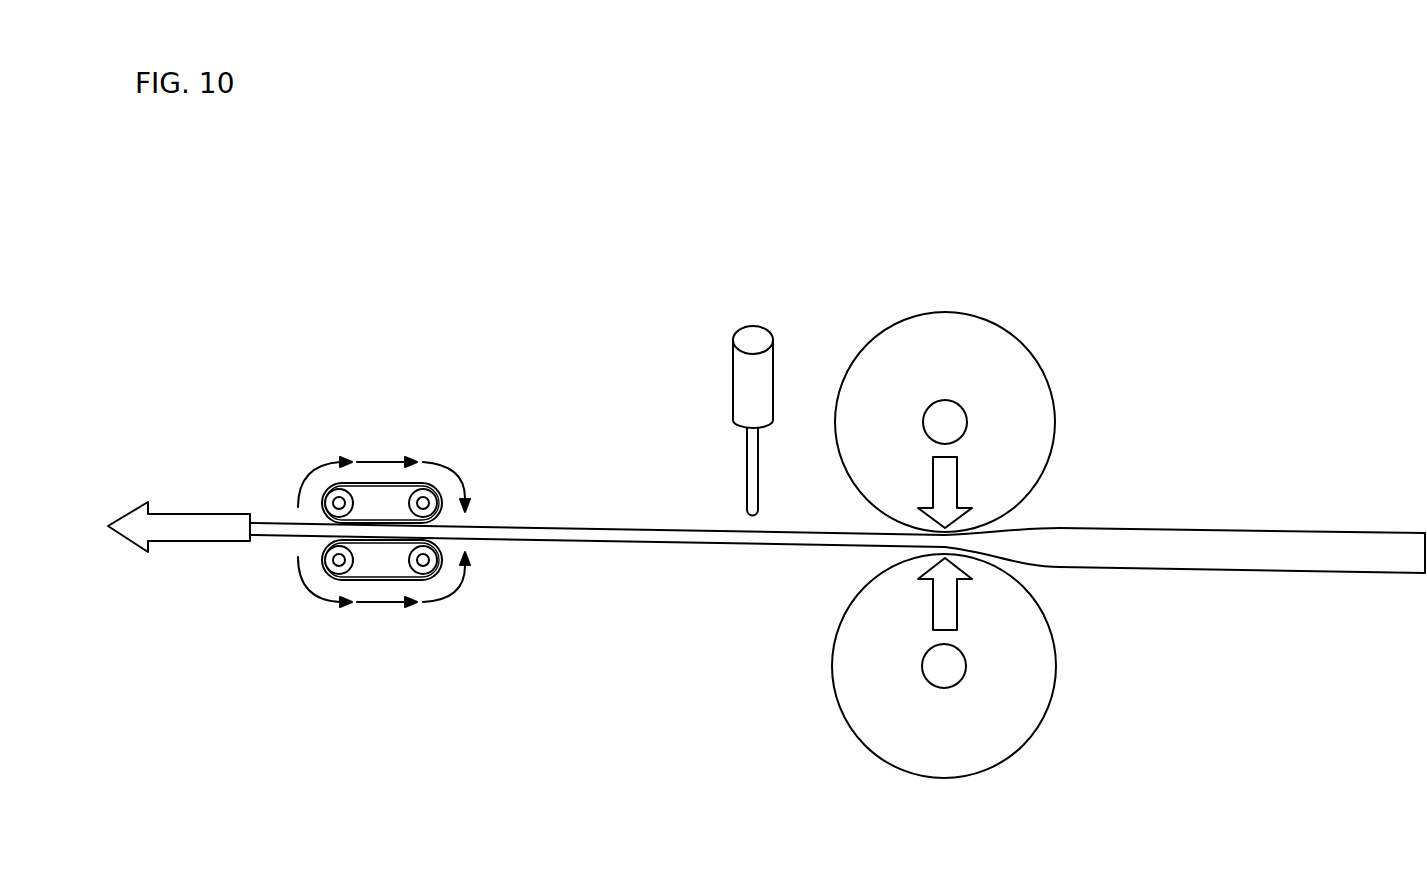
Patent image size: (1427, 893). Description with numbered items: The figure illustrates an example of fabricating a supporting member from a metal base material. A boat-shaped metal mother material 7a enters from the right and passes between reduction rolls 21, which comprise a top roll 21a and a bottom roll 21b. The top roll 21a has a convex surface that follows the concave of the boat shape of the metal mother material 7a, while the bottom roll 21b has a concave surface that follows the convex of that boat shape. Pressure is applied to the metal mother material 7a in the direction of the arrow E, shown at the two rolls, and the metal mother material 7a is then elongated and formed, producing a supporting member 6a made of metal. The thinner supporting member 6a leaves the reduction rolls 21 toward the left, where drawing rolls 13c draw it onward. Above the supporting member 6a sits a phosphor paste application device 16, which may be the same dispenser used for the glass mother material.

The supporting member 6a is at (603, 528).
The metal mother material 7a is at (1210, 528).
The drawing rolls 13c is at (378, 485).
The phosphor paste application device 16 is at (755, 333).
The reduction rolls 21 is at (993, 477).
The top roll 21a is at (1030, 355).
The bottom roll 21b is at (1055, 680).
The arrow E is at (957, 598).